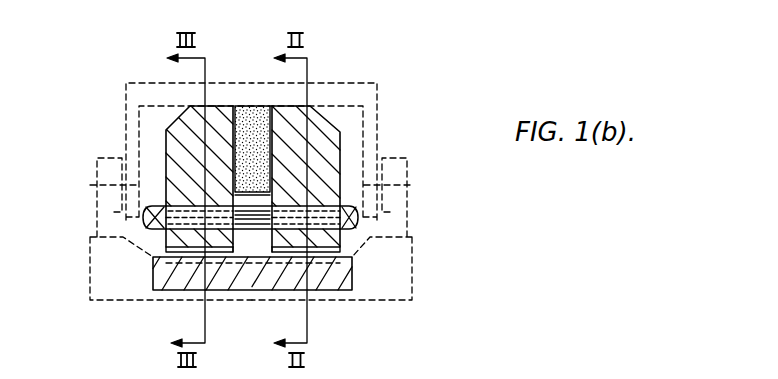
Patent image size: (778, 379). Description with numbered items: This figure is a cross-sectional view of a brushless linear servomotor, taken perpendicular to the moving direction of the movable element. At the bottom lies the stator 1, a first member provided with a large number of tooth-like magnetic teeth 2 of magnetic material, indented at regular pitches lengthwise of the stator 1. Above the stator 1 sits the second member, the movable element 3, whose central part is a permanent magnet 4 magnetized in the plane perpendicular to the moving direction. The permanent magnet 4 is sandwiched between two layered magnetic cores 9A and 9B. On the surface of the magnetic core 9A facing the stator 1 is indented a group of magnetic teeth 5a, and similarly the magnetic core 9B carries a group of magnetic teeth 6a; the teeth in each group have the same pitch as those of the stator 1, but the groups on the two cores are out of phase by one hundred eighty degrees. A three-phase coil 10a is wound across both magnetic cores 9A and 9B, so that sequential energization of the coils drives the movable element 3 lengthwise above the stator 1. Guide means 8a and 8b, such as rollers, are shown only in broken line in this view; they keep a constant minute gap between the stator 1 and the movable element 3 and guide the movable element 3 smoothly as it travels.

The stator 1 is at (163, 272).
The magnetic teeth 2 is at (327, 268).
The movable element 3 is at (285, 106).
The permanent magnet 4 is at (245, 104).
The magnetic teeth group 5a is at (312, 250).
The magnetic teeth group 6a is at (223, 251).
The guide means 8a is at (408, 220).
The guide means 8b is at (97, 163).
The magnetic core 9A is at (318, 143).
The magnetic core 9B is at (182, 128).
The three-phase coil 10a is at (358, 213).